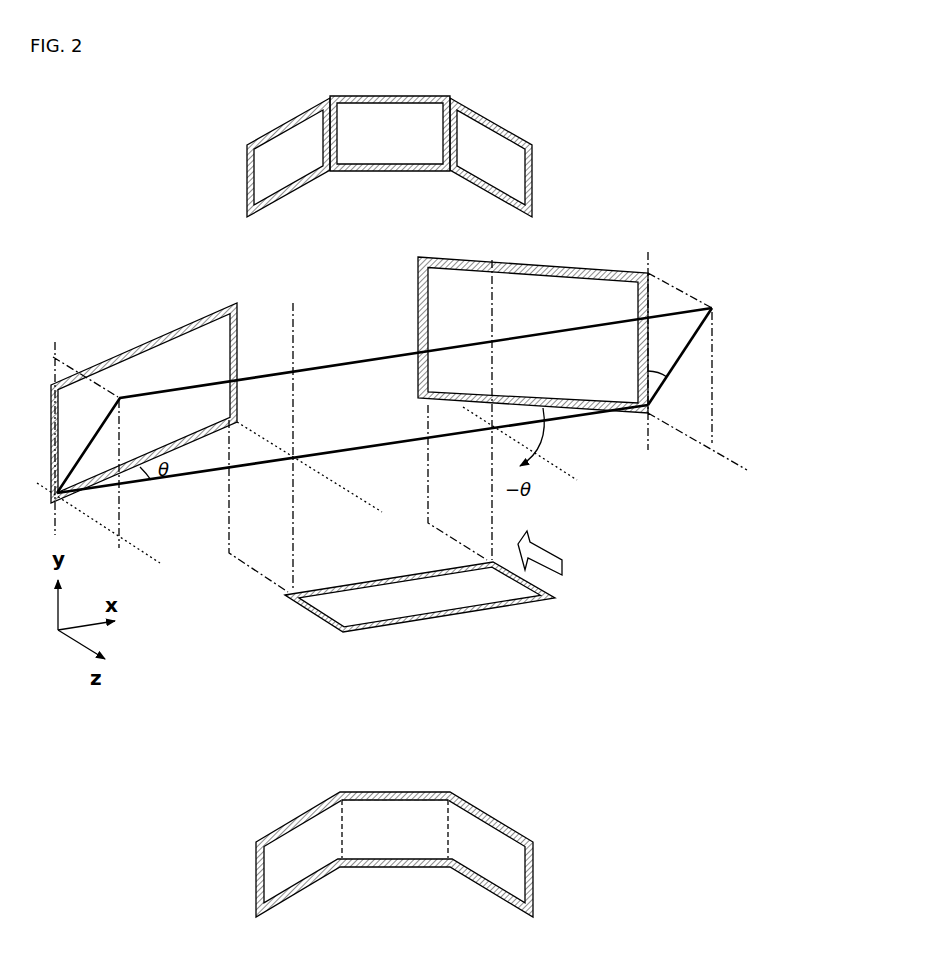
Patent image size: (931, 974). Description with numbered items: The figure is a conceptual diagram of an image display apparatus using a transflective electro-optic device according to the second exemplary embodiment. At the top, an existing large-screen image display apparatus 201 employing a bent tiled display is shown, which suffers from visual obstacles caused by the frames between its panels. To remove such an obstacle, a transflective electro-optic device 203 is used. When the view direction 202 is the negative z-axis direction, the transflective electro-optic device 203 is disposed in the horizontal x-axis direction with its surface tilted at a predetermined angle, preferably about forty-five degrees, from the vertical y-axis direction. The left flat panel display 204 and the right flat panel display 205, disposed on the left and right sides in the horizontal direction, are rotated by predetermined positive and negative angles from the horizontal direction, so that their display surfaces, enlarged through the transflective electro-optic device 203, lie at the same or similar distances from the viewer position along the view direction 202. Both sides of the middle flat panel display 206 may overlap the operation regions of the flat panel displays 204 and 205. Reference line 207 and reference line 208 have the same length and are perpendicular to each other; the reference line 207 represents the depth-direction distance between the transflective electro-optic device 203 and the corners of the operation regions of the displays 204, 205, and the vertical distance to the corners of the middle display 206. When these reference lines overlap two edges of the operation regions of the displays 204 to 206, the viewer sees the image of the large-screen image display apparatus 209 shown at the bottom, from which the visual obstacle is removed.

The large-screen image display apparatus 201 is at (538, 153).
The view direction 202 is at (573, 567).
The transflective electro-optic device 203 is at (709, 328).
The left flat panel display 204 is at (126, 345).
The right flat panel display 205 is at (414, 318).
The middle flat panel display 206 is at (445, 629).
The reference line 207 is at (454, 412).
The reference line 208 is at (416, 487).
The large-screen image display apparatus 209 is at (403, 785).